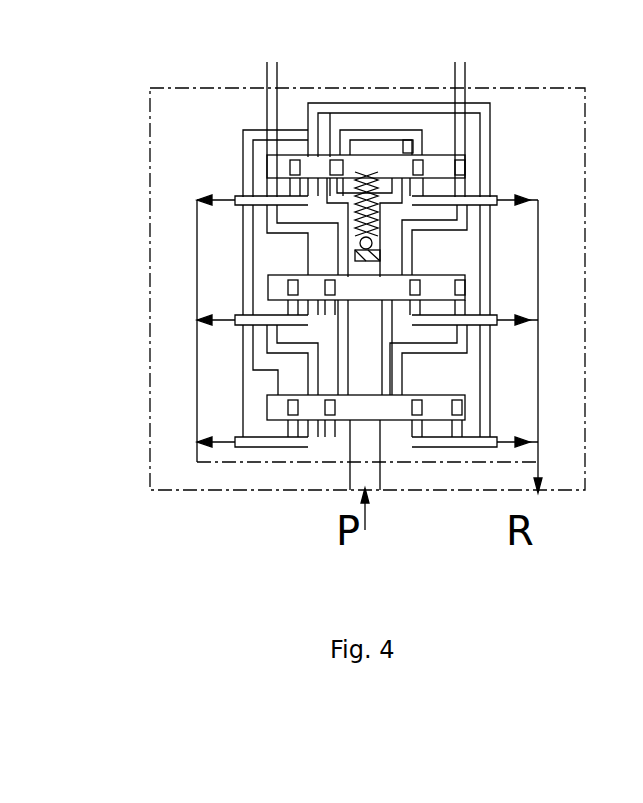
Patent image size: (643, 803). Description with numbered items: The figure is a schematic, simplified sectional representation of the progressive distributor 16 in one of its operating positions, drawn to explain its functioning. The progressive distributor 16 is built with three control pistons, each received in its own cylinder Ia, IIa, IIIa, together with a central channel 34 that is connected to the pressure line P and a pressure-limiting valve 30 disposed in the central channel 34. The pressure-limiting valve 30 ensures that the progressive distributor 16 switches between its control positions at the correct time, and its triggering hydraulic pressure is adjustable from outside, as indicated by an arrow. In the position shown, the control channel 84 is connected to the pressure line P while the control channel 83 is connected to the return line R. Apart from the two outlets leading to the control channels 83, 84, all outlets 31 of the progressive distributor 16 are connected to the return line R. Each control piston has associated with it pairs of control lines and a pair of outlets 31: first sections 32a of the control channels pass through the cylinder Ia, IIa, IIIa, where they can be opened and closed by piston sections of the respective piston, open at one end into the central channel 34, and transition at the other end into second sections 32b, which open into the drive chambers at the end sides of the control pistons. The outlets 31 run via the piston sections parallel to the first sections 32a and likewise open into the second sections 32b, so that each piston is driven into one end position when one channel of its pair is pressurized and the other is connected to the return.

The progressive distributor 16 is at (588, 90).
The pressure-limiting valve 30 is at (463, 213).
The control channel 84 is at (267, 73).
The control channel 83 is at (468, 75).
The cylinder IIIa is at (267, 123).
The cylinder IIa is at (262, 265).
The cylinder Ia is at (285, 445).
The first section of control channel 32a is at (310, 118).
The second section of control channel 32b is at (255, 178).
The central channel 34 is at (364, 283).
The outlet 31 is at (238, 194).